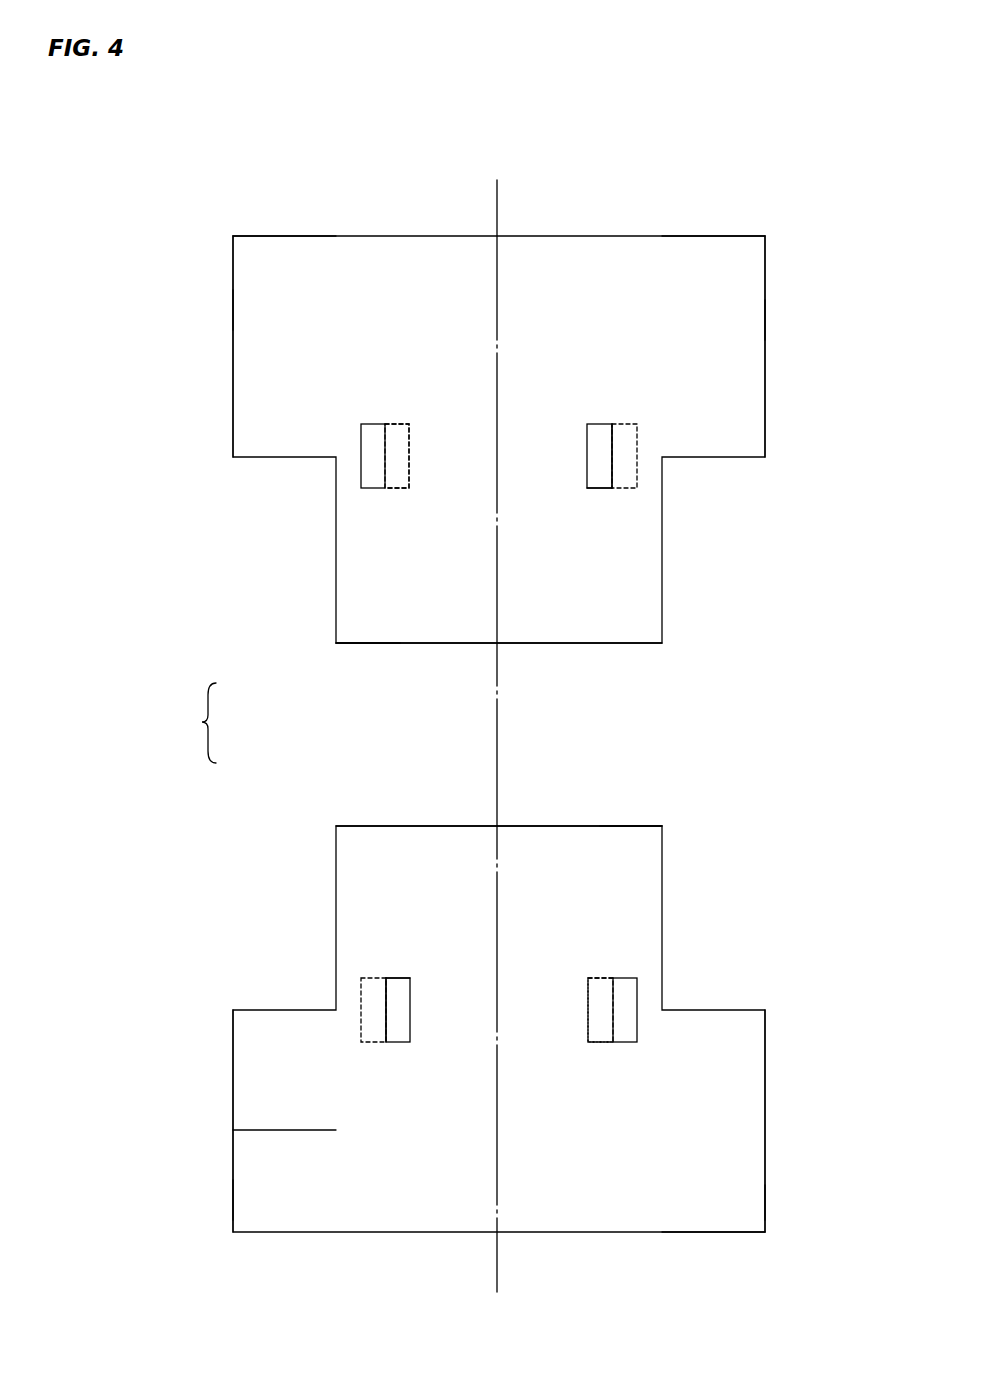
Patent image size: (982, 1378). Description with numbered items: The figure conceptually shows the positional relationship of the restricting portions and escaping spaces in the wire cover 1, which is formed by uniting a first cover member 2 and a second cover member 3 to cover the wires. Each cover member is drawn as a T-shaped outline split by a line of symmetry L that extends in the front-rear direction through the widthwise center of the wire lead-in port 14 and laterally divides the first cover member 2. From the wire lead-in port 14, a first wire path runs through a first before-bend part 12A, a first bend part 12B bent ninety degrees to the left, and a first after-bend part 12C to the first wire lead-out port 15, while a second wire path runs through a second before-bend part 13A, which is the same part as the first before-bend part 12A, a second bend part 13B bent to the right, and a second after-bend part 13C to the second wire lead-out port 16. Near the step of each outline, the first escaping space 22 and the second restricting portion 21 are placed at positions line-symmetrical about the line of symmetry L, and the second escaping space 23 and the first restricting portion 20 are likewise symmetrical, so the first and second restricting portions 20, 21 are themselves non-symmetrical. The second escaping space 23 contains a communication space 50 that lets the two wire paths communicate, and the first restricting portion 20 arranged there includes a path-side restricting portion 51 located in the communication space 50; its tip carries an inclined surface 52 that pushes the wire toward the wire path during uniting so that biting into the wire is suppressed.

The wire cover 1 is at (199, 723).
The first cover member 2 is at (282, 778).
The second cover member 3 is at (284, 667).
The first before-bend part 12A is at (550, 625).
The first bend part 12B is at (616, 317).
The first after-bend part 12C is at (722, 256).
The second before-bend part 13A is at (437, 625).
The second bend part 13B is at (423, 324).
The second after-bend part 13C is at (317, 257).
The wire lead-in port 14 is at (368, 648).
The first wire lead-out port 15 is at (765, 318).
The second wire lead-out port 16 is at (233, 305).
The first restricting portion 20 is at (600, 447).
The second restricting portion 21 is at (370, 450).
The first escaping space 22 is at (625, 455).
The second escaping space 23 is at (397, 450).
The communication space 50 is at (397, 478).
The path-side restricting portion 51 is at (602, 472).
The inclined surface 52 is at (598, 490).
The line of symmetry L is at (497, 200).